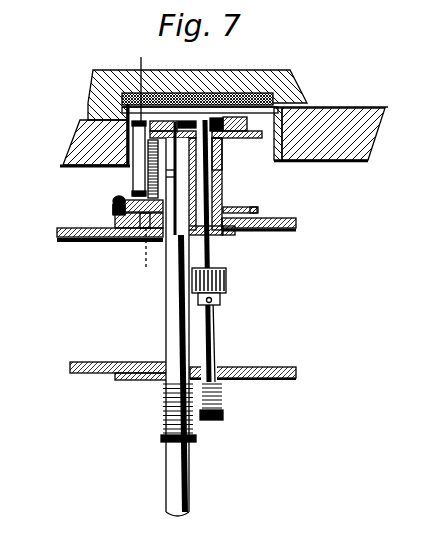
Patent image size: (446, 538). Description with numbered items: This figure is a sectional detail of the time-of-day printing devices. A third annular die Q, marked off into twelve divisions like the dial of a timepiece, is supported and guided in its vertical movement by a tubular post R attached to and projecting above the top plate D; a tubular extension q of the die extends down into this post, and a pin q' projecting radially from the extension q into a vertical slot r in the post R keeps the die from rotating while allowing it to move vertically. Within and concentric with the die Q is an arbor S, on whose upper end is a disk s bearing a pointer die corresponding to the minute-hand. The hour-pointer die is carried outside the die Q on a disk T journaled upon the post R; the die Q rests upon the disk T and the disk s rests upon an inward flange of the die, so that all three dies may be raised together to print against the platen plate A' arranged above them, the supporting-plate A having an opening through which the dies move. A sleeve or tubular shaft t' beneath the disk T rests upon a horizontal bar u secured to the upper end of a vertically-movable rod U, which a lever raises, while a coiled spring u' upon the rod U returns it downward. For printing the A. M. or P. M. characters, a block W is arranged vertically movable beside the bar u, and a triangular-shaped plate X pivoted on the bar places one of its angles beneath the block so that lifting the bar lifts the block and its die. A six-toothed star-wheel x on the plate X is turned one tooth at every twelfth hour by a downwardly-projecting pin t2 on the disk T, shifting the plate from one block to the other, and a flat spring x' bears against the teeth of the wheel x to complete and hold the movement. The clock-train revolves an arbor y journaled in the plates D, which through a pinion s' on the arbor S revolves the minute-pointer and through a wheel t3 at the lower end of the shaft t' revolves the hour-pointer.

The plate A' is at (197, 81).
The block W is at (118, 149).
The supporting-plate A is at (263, 134).
The disk s is at (200, 118).
The disk T is at (268, 137).
The annular die Q is at (207, 175).
The tubular extension q is at (231, 161).
The arbor y is at (135, 164).
The pin q' is at (127, 169).
The star-wheel x is at (119, 199).
The triangular-shaped plate X is at (112, 208).
The flat spring x' is at (93, 237).
The horizontal bar u is at (183, 246).
The pin t2 is at (144, 229).
The top plate D is at (296, 223).
The tubular post R is at (225, 194).
The wheel t3 is at (258, 210).
The sleeve or tubular shaft t' is at (229, 240).
The vertically-movable rod U is at (168, 316).
The vertical slot r is at (172, 158).
The arbor S is at (211, 243).
The pinion s' is at (219, 286).
The coiled spring u' is at (178, 413).